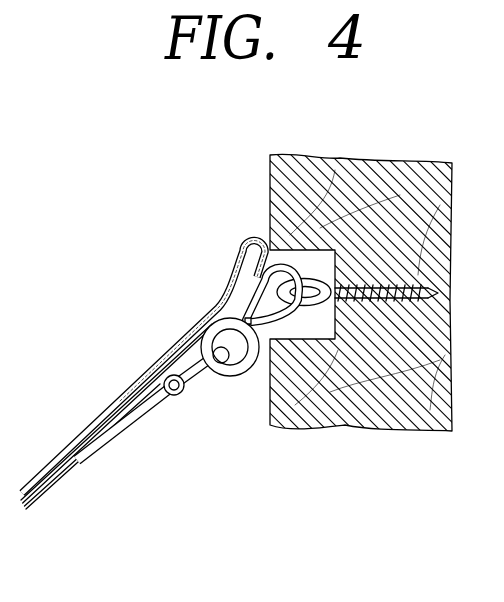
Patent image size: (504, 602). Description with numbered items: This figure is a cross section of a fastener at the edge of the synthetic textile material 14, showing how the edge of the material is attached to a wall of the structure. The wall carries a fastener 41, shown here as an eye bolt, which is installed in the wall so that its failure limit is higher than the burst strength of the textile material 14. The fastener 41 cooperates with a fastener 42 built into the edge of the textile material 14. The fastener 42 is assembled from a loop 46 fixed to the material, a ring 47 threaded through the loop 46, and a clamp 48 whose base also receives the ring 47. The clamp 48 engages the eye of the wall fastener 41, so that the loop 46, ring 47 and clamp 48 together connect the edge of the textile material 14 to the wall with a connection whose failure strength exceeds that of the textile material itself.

The textile material 14 is at (116, 416).
The fasteners 41 is at (273, 228).
The fasteners 42 is at (242, 433).
The loops 46 is at (124, 430).
The rings 47 is at (192, 380).
The clamps 48 is at (243, 318).